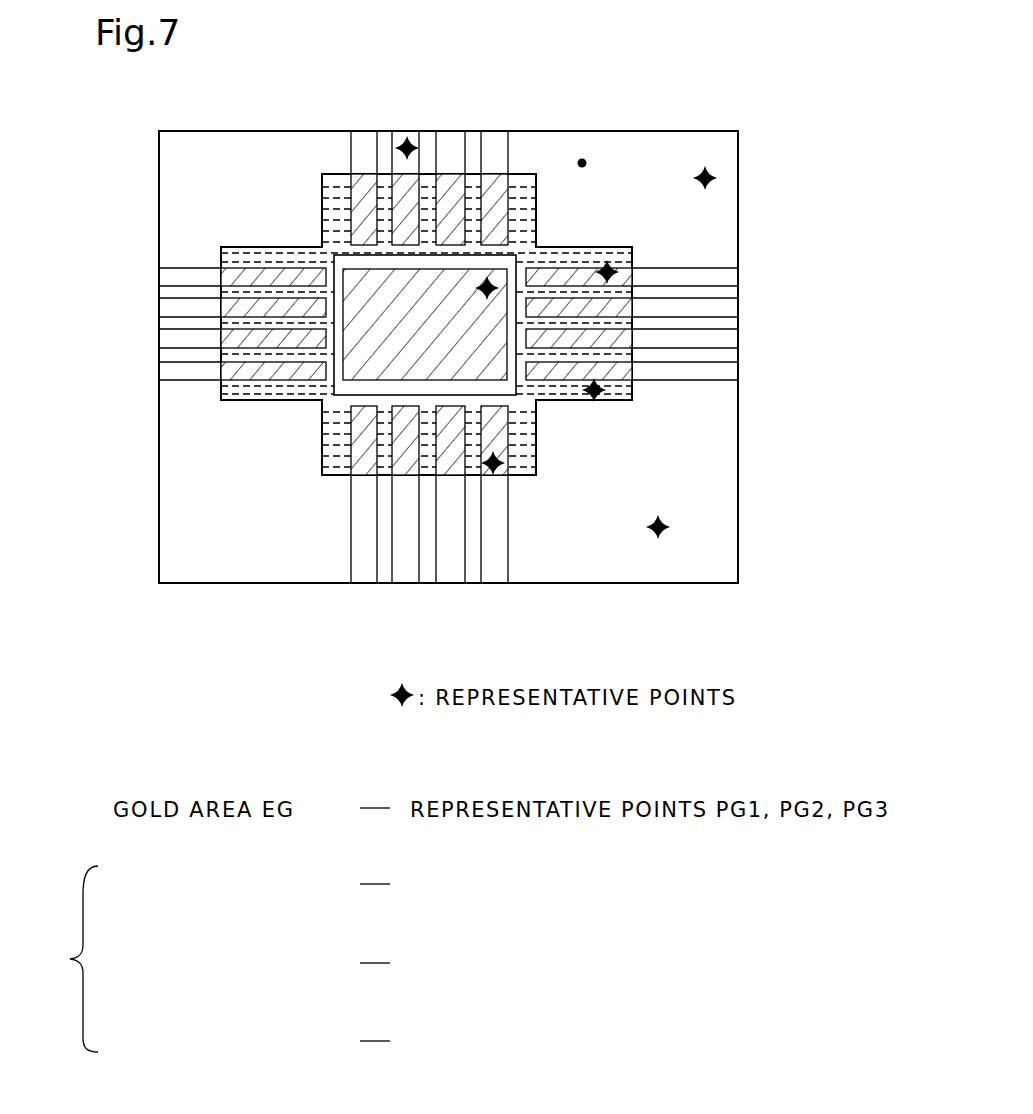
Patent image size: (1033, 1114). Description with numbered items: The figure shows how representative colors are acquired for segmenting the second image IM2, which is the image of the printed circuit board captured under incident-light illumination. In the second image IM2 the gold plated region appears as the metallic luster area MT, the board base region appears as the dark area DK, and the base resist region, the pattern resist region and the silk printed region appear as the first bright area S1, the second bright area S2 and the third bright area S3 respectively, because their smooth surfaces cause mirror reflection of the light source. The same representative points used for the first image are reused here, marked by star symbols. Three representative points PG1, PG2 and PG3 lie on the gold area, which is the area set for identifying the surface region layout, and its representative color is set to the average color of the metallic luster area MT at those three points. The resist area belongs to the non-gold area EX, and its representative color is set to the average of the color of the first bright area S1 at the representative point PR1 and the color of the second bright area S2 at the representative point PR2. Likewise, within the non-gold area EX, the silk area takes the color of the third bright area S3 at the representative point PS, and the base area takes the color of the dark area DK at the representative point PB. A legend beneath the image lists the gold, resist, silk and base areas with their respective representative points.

The second image IM2 is at (696, 131).
The metallic luster area MT is at (359, 232).
The representative point PR1 is at (705, 178).
The representative point PR2 is at (407, 148).
The representative point PG1 is at (487, 288).
The representative point PG2 is at (607, 272).
The representative point PG3 is at (493, 463).
The representative point PB is at (594, 390).
The representative point PS is at (658, 527).
The first bright area S1 is at (582, 163).
The second bright area S2 is at (196, 373).
The third bright area S3 is at (632, 519).
The dark area DK is at (545, 391).
The non-gold area EX is at (429, 960).